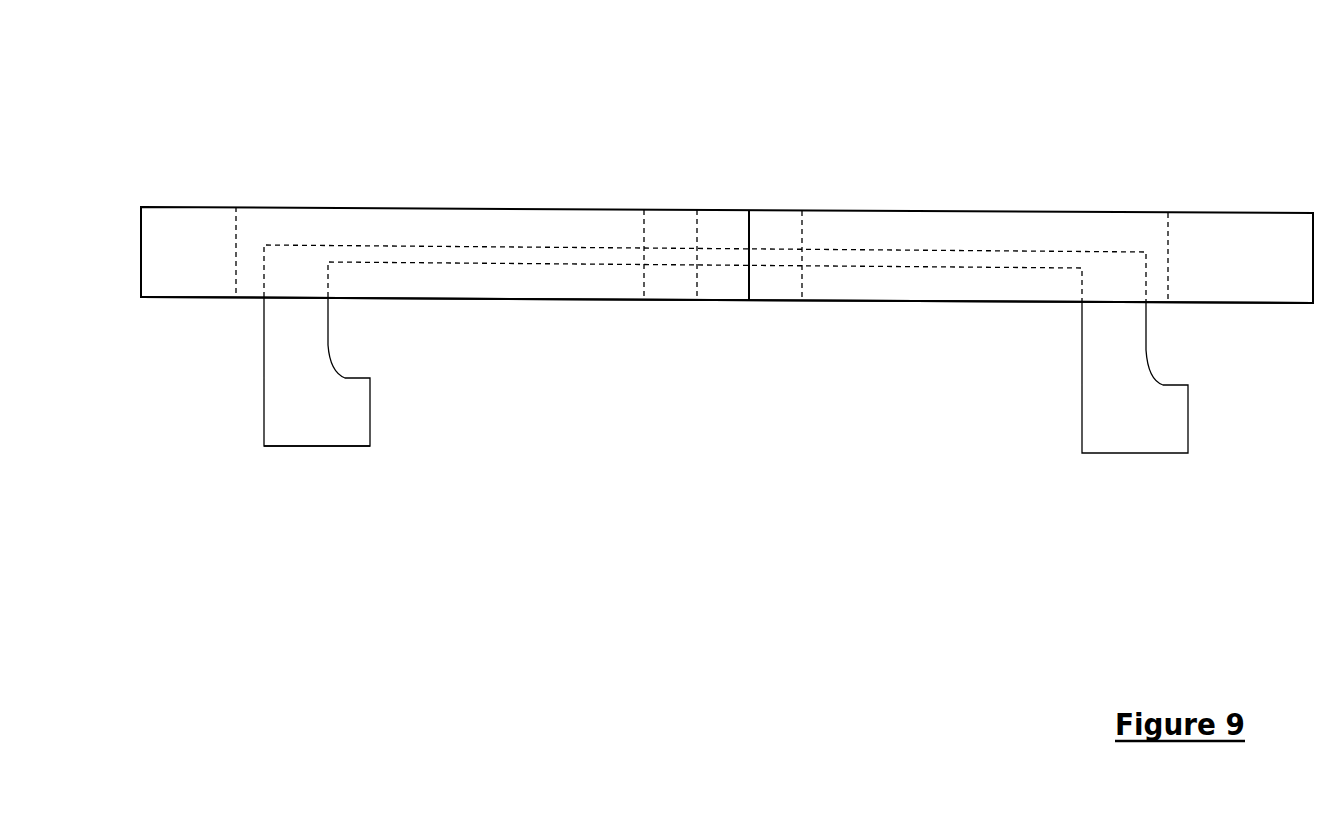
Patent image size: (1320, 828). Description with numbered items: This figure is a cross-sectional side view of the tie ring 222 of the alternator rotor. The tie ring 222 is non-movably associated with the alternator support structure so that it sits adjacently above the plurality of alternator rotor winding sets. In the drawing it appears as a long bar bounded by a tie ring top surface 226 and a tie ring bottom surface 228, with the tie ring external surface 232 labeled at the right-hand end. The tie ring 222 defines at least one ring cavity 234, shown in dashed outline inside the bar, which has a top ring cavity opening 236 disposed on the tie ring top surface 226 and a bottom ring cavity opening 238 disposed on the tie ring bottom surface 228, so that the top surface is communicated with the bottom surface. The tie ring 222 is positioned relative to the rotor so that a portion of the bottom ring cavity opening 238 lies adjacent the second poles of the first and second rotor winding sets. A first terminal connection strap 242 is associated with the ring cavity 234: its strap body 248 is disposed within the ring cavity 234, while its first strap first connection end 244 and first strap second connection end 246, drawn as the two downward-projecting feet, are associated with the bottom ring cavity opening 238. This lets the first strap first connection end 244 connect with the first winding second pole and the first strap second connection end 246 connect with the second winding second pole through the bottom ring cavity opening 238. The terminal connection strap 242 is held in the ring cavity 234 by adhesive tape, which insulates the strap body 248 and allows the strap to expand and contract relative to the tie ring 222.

The tie ring 222 is at (1124, 64).
The tie ring top surface 226 is at (727, 209).
The tie ring bottom surface 228 is at (727, 346).
The tie ring external surface 232 is at (1285, 275).
The ring cavity 234 is at (284, 187).
The top ring cavity opening 236 is at (866, 187).
The bottom ring cavity opening 238 is at (656, 352).
The first terminal connection strap 242 is at (288, 410).
The first strap first connection end 244 is at (322, 499).
The first strap second connection end 246 is at (1135, 426).
The strap body 248 is at (705, 319).